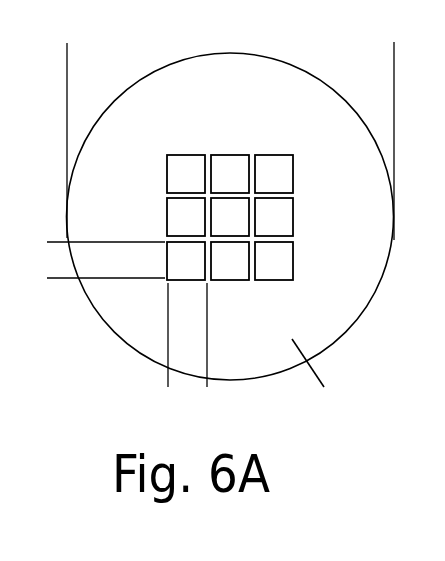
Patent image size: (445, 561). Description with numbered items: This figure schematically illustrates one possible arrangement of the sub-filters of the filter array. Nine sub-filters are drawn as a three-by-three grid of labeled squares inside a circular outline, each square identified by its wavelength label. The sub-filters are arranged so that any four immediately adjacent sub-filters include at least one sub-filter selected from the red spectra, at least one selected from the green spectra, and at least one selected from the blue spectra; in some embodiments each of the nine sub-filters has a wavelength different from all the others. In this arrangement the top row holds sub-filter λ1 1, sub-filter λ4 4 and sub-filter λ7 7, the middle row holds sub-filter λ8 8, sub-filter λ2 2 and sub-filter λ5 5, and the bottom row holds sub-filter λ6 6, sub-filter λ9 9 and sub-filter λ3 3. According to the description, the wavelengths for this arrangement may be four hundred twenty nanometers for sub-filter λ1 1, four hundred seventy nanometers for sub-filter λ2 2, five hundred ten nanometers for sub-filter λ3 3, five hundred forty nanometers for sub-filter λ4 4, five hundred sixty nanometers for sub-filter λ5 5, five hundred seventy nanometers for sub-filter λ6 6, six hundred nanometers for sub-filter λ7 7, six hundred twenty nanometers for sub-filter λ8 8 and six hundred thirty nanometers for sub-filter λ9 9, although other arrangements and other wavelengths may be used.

The sub-filter λ 1 is at (186, 174).
The sub-filter λ 2 is at (230, 217).
The sub-filter λ 3 is at (274, 261).
The sub-filter λ 4 is at (230, 174).
The sub-filter λ 5 is at (274, 217).
The sub-filter λ 6 is at (186, 261).
The sub-filter λ 7 is at (274, 174).
The sub-filter λ 8 is at (186, 217).
The sub-filter λ 9 is at (230, 261).